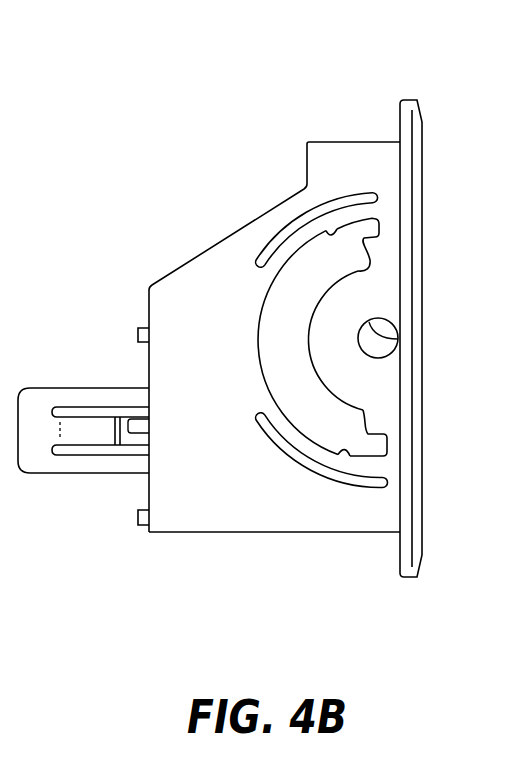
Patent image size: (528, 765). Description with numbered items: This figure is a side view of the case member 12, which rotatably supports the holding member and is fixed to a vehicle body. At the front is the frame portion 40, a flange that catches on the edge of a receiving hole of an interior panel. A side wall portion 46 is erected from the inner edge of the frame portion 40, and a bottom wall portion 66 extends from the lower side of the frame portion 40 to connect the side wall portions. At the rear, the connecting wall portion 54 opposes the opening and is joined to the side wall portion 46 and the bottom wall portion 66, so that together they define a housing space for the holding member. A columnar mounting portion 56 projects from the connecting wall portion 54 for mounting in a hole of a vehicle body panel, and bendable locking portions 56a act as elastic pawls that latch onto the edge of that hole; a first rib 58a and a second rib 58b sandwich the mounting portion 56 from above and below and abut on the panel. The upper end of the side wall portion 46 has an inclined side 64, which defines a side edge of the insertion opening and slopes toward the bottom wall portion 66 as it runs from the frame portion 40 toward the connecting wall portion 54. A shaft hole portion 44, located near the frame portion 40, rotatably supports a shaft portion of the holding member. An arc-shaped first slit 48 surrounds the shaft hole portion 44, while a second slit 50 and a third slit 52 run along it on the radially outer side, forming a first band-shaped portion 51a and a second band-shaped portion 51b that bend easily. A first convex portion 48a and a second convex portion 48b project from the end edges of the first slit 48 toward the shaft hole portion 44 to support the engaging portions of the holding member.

The case member 12 is at (470, 540).
The frame portion 40 is at (418, 215).
The shaft hole portion 44 is at (398, 339).
The side wall portion 46 is at (210, 290).
The first slit 48 is at (258, 343).
The first convex portion 48a is at (330, 238).
The second convex portion 48b is at (341, 446).
The second slit 50 is at (303, 211).
The first band-shaped portion 51a is at (353, 229).
The second band-shaped portion 51b is at (370, 463).
The third slit 52 is at (279, 447).
The connecting wall portion 54 is at (150, 492).
The mounting portion 56 is at (52, 380).
The locking portion 56a is at (110, 432).
The first rib 58a is at (137, 336).
The second rib 58b is at (137, 522).
The inclined side 64 is at (243, 222).
The bottom wall portion 66 is at (343, 534).